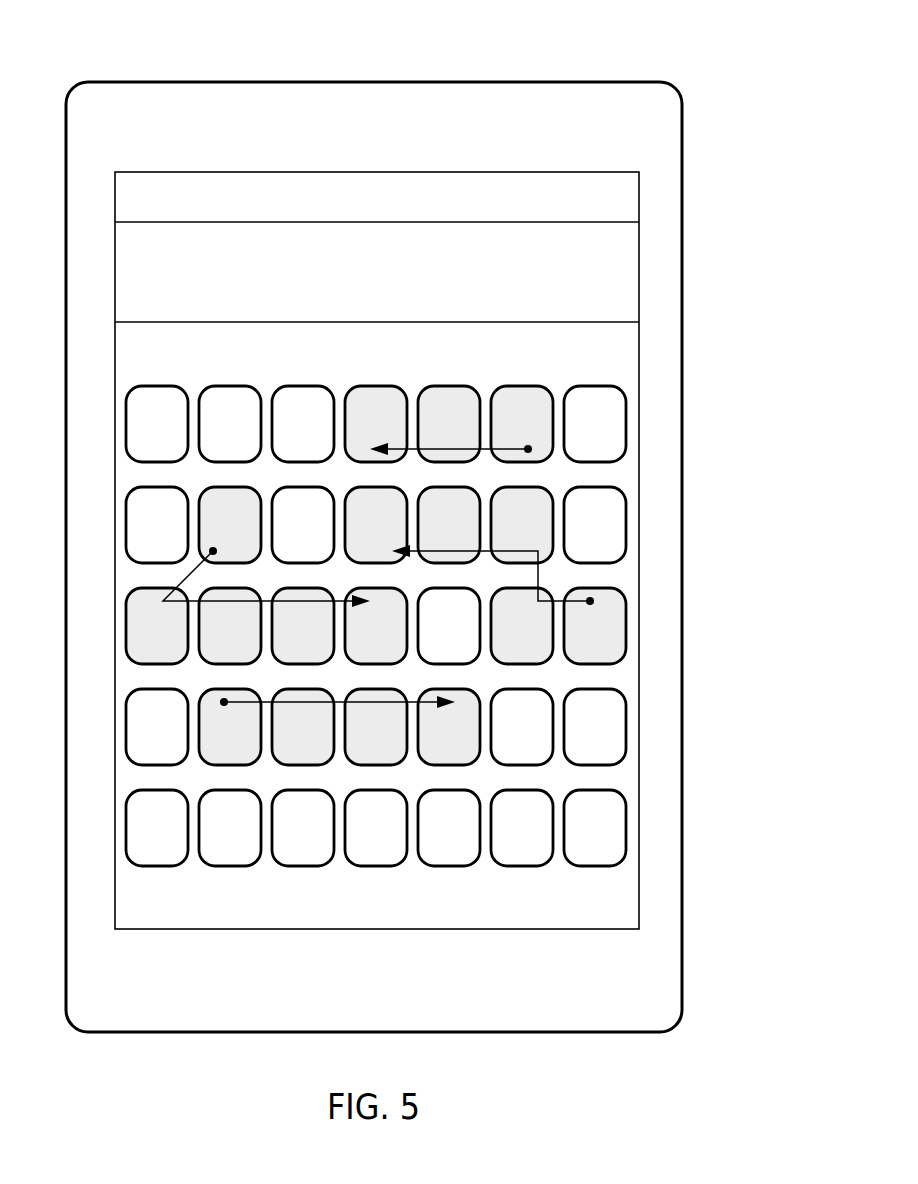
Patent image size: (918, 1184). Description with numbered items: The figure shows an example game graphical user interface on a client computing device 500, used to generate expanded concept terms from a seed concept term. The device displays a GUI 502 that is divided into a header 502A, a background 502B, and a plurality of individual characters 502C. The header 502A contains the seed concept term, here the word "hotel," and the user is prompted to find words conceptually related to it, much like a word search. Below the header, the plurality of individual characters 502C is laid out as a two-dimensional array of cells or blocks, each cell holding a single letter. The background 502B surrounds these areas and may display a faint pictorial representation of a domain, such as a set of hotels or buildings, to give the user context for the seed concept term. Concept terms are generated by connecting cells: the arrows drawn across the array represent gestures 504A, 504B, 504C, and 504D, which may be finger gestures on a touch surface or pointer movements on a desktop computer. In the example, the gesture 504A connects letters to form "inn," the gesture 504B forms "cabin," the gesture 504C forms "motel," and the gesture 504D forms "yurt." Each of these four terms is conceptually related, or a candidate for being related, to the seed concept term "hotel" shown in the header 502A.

The client computing device 500 is at (563, 82).
The GUI 502 is at (639, 196).
The header 502A is at (590, 284).
The background 502B is at (577, 349).
The plurality of individual characters 502C is at (627, 400).
The gesture 504A is at (488, 450).
The gesture 504B is at (538, 575).
The gesture 504C is at (190, 578).
The gesture 504D is at (266, 701).